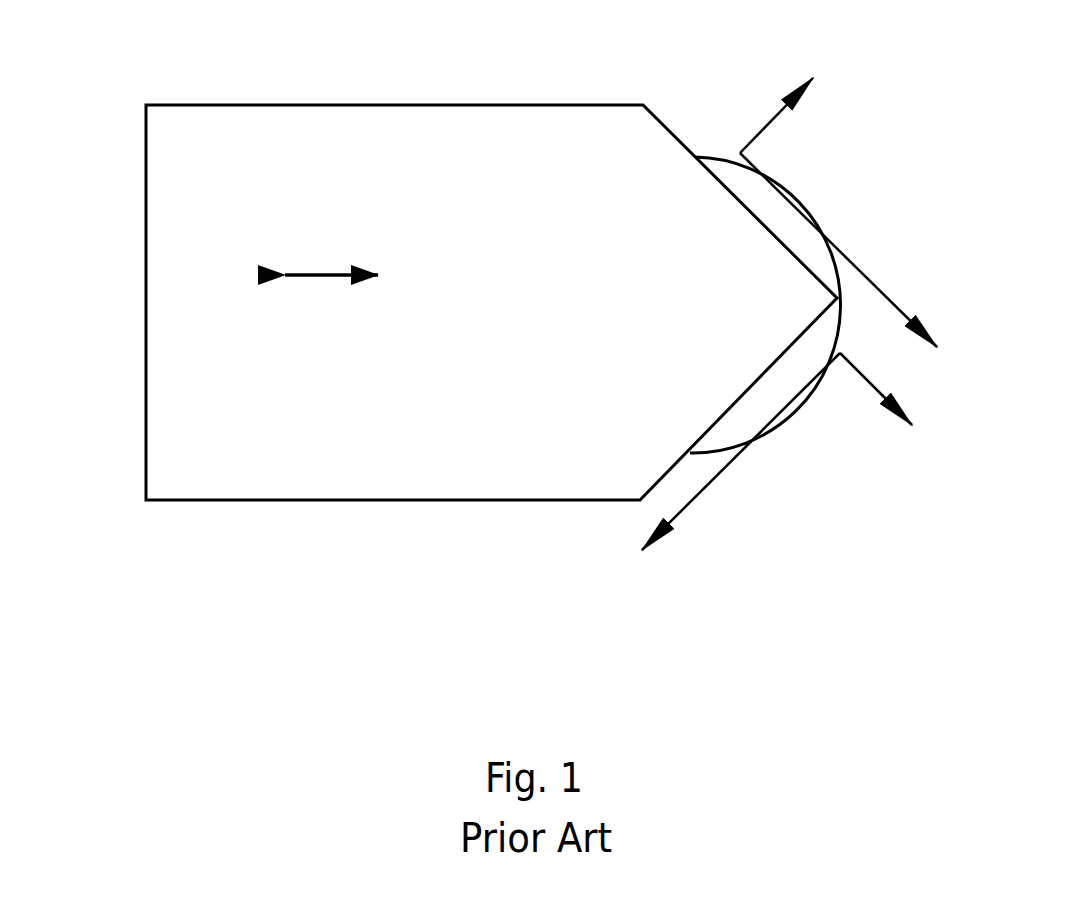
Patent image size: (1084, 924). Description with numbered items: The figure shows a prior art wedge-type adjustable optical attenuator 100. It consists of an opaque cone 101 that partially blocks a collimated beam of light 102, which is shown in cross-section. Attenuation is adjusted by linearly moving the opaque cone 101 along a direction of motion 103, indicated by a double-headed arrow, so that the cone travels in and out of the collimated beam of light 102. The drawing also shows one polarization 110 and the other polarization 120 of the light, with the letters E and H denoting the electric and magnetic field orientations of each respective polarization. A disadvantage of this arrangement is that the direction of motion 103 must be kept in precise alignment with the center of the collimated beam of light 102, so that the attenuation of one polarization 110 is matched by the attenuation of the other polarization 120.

The adjustable optical attenuator 100 is at (500, 361).
The opaque cone 101 is at (143, 217).
The collimated beam of light 102 is at (707, 153).
The direction of motion 103 is at (342, 268).
The one polarization 110 is at (853, 260).
The other polarization 120 is at (733, 465).